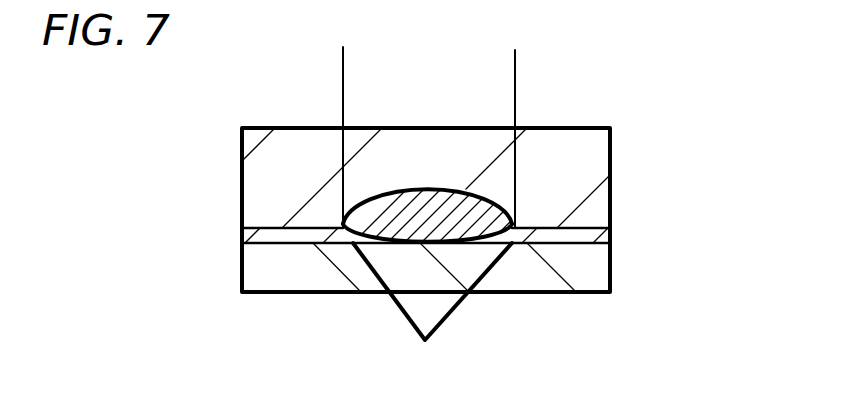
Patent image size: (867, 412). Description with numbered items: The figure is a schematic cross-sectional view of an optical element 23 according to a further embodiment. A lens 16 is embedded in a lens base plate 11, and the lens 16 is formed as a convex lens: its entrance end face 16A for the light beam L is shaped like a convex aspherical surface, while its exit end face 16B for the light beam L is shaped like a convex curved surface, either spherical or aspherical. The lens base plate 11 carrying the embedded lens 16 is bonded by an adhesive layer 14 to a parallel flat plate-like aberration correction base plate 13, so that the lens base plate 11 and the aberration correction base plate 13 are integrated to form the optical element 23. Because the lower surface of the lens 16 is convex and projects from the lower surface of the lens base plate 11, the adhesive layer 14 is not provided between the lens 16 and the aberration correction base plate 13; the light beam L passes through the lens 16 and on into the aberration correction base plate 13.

The optical element 23 is at (715, 130).
The lens base plate 11 is at (597, 155).
The aberration correction base plate 13 is at (597, 275).
The adhesive layer 14 is at (603, 238).
The lens 16 is at (483, 220).
The entrance end face 16A is at (428, 185).
The exit end face 16B is at (359, 244).
The light beam L is at (515, 83).